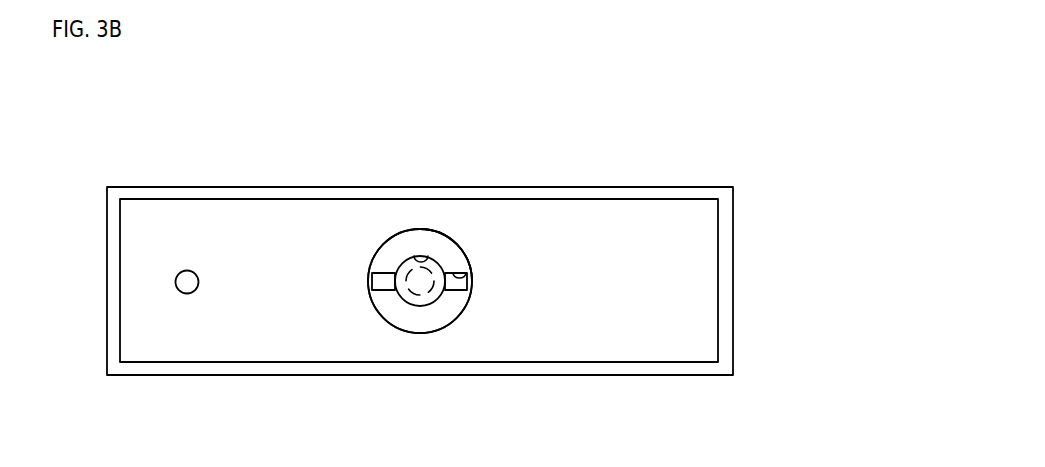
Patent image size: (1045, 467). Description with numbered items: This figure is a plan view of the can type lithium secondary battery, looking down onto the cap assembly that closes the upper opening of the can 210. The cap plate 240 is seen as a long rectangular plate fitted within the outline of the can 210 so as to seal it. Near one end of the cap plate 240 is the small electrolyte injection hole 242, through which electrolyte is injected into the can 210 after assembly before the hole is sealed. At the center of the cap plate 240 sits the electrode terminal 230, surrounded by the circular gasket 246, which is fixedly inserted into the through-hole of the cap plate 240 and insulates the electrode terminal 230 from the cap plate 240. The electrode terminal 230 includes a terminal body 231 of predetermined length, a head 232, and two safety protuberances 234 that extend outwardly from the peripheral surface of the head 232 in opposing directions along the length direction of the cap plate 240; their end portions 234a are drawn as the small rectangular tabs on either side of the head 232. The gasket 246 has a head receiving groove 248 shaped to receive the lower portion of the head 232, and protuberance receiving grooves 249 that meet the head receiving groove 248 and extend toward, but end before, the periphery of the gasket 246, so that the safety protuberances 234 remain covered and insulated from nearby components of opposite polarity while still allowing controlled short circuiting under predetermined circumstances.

The can 210 is at (718, 194).
The cap plate 240 is at (650, 219).
The electrolyte injection hole 242 is at (185, 271).
The electrode terminal 230 is at (397, 311).
The terminal body 231 is at (423, 287).
The head 232 is at (409, 257).
The safety protuberance 234 is at (380, 250).
The electrode leads 234a is at (372, 279).
The gasket 246 is at (449, 246).
The head receiving groove 248 is at (431, 254).
The protuberance receiving groove 249 is at (455, 274).